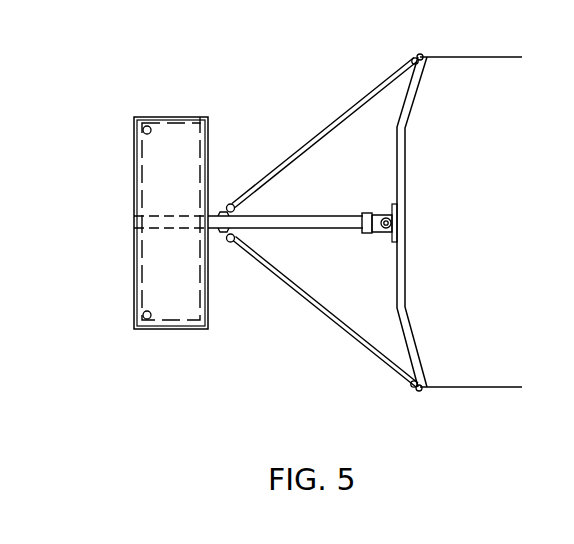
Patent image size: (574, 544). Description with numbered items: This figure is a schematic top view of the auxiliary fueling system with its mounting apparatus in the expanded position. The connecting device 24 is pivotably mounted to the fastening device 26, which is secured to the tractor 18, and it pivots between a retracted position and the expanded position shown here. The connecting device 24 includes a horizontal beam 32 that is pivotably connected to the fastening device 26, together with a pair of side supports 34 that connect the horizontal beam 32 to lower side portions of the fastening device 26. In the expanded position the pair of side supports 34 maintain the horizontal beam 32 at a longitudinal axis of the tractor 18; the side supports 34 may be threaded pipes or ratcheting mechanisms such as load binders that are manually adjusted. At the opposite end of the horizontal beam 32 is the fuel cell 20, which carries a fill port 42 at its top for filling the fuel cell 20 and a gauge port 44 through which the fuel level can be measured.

The tractor 18 is at (397, 128).
The fuel cell 20 is at (134, 202).
The connecting device 24 is at (270, 337).
The fastening device 26 is at (382, 239).
The horizontal beam 32 is at (283, 215).
The side supports 34 is at (342, 115).
The fill port 42 is at (144, 131).
The gauge port 44 is at (144, 316).